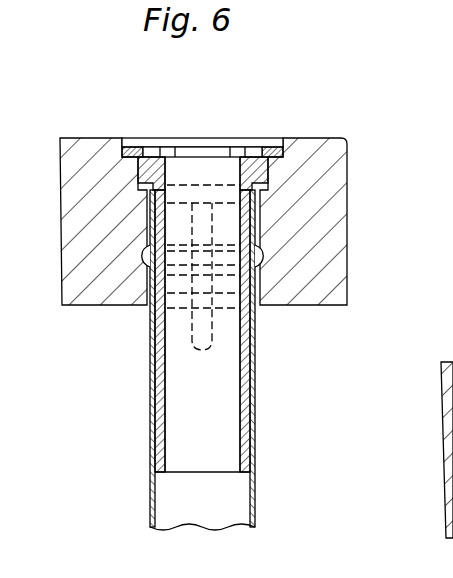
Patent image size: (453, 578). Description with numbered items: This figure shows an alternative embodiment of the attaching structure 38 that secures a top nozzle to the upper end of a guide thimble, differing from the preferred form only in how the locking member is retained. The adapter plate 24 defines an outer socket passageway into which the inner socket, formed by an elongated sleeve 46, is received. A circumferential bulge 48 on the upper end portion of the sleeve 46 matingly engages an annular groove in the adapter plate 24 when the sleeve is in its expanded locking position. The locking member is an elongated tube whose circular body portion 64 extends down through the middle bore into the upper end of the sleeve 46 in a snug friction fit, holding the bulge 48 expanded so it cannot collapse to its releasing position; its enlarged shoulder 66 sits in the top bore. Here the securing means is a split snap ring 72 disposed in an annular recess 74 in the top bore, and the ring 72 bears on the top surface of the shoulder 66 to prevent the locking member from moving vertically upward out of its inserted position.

The adapter plate 24 is at (84, 307).
The attaching structure 38 is at (267, 130).
The sleeve 46 is at (257, 453).
The circumferential bulge 48 is at (147, 270).
The body portion 64 is at (240, 424).
The shoulder 66 is at (265, 180).
The split snap ring 72 is at (160, 148).
The annular recess 74 is at (285, 150).